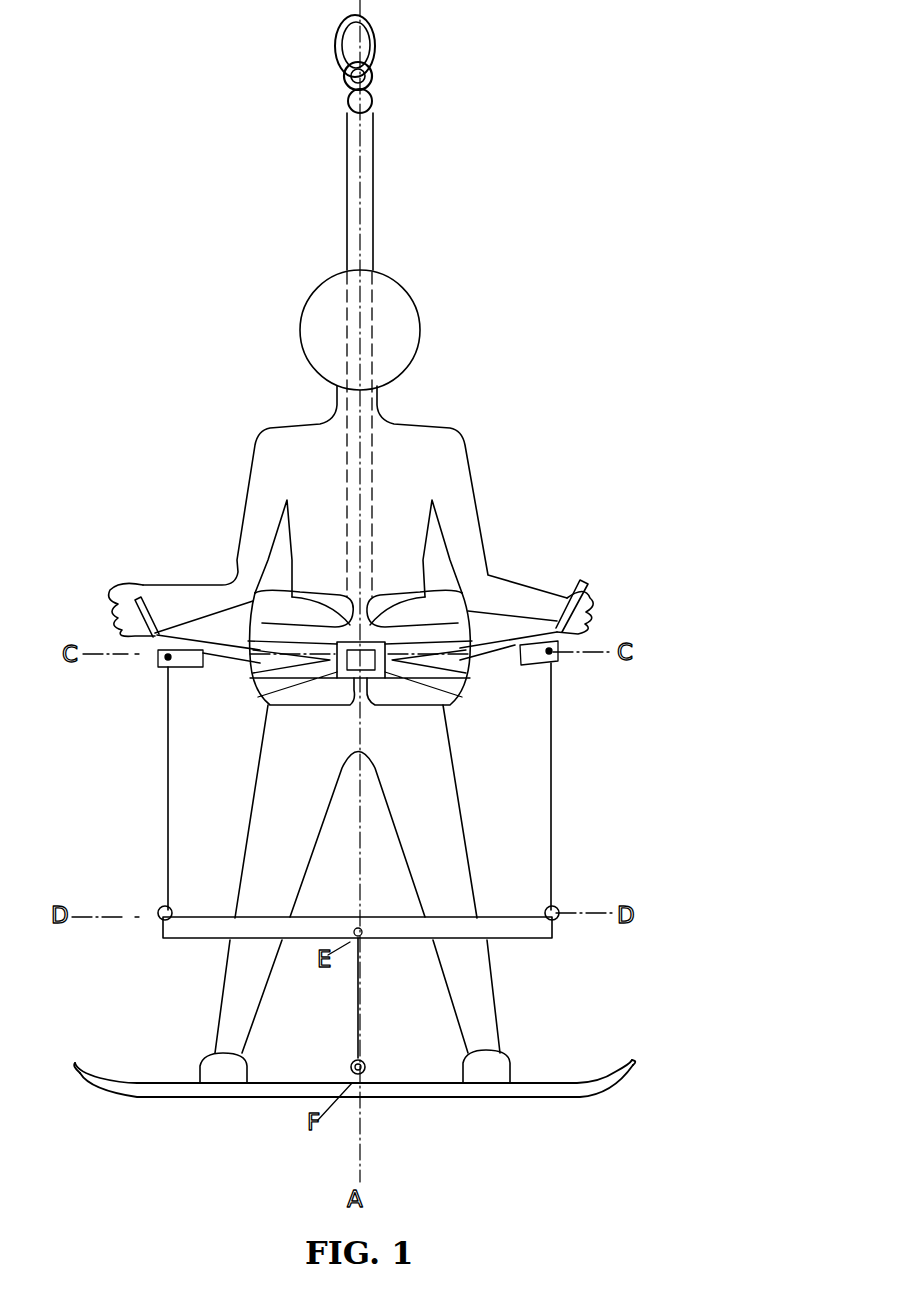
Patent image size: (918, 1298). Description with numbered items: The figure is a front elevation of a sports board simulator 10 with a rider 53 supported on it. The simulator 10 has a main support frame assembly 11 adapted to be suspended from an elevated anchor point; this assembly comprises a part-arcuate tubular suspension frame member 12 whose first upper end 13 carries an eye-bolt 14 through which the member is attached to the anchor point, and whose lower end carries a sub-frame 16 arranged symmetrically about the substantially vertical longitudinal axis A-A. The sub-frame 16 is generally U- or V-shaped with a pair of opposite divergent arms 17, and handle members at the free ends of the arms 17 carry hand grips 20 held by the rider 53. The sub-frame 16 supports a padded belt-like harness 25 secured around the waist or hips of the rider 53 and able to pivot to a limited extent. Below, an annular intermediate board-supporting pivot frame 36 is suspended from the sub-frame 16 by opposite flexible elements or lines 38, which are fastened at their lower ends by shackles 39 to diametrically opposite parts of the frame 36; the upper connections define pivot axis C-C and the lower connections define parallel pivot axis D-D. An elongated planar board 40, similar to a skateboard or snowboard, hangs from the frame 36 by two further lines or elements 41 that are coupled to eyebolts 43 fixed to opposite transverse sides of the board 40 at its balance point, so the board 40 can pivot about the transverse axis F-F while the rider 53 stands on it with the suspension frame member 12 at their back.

The sports board simulator 10 is at (404, 804).
The main support frame assembly 11 is at (414, 306).
The suspension frame member 12 is at (375, 160).
The first upper end 13 is at (373, 97).
The eye-bolt 14 is at (375, 72).
The sub-frame 16 is at (138, 676).
The divergent arms 17 is at (535, 607).
The hand grips 20 is at (120, 580).
The harness 25 is at (463, 588).
The intermediate board-supporting pivot frame 36 is at (563, 943).
The elements or lines 38 is at (167, 813).
The shackles 39 is at (162, 920).
The board 40 is at (216, 1105).
The lines or elements 41 is at (358, 1015).
The eyebolts 43 is at (362, 1074).
The rider 53 is at (489, 432).